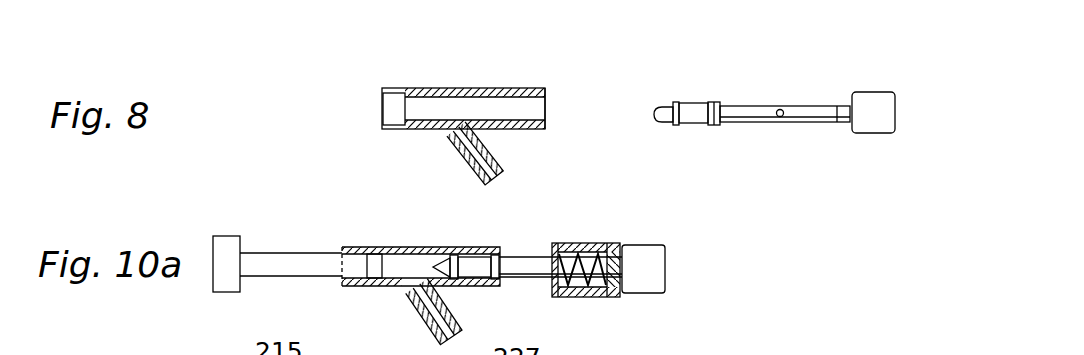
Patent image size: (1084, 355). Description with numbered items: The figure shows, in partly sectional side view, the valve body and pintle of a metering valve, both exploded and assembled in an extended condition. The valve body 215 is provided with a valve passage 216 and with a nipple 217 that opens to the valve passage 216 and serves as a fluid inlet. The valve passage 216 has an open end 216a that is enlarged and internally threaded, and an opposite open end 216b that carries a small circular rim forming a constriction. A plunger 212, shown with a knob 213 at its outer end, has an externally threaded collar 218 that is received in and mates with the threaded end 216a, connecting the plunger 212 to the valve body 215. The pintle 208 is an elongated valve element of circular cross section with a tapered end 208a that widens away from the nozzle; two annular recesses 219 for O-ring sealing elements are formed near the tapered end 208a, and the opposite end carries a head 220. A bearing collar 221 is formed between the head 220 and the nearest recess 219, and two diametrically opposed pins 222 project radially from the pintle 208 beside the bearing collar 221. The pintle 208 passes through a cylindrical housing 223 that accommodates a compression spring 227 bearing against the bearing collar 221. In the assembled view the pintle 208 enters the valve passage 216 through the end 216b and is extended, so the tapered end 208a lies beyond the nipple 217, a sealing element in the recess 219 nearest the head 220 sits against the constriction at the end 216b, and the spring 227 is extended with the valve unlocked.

In FIG. 8, the pintle 208 is at (747, 123).
In FIG. 10A, the pintle 208 is at (525, 255).
In FIG. 8, the tapered end 208a is at (662, 105).
In FIG. 10A, the plunger 212 is at (280, 252).
In FIG. 10A, the push rod knob 213 is at (222, 295).
In FIG. 8, the valve body 215 is at (443, 86).
In FIG. 10A, the valve body 215 is at (398, 247).
In FIG. 8, the valve passage 216 is at (492, 107).
In FIG. 8, the open end 216a is at (383, 103).
In FIG. 8, the open end 216b is at (543, 110).
In FIG. 8, the nipple 217 is at (447, 137).
In FIG. 10A, the nipple 217 is at (458, 317).
In FIG. 10A, the externally threaded collar 218 is at (353, 270).
In FIG. 8, the annular recesses 219 is at (711, 128).
In FIG. 8, the head 220 is at (867, 92).
In FIG. 10A, the head 220 is at (668, 265).
In FIG. 8, the bearing collar 221 is at (773, 107).
In FIG. 8, the pins 222 is at (783, 117).
In FIG. 10A, the cylindrical housing 223 is at (567, 298).
In FIG. 10A, the compression spring 227 is at (600, 247).